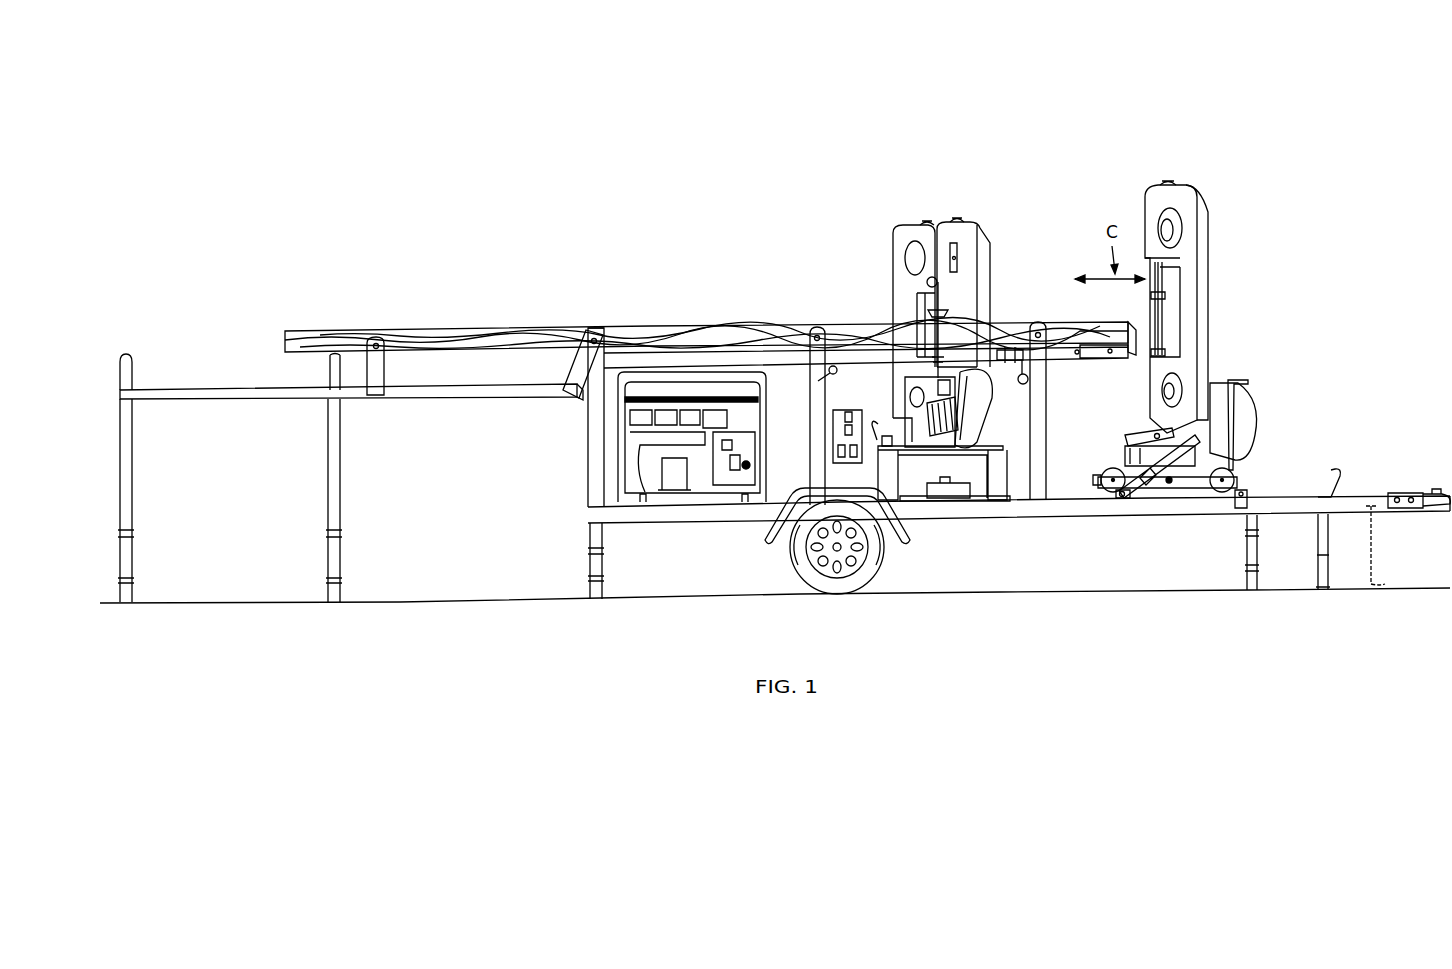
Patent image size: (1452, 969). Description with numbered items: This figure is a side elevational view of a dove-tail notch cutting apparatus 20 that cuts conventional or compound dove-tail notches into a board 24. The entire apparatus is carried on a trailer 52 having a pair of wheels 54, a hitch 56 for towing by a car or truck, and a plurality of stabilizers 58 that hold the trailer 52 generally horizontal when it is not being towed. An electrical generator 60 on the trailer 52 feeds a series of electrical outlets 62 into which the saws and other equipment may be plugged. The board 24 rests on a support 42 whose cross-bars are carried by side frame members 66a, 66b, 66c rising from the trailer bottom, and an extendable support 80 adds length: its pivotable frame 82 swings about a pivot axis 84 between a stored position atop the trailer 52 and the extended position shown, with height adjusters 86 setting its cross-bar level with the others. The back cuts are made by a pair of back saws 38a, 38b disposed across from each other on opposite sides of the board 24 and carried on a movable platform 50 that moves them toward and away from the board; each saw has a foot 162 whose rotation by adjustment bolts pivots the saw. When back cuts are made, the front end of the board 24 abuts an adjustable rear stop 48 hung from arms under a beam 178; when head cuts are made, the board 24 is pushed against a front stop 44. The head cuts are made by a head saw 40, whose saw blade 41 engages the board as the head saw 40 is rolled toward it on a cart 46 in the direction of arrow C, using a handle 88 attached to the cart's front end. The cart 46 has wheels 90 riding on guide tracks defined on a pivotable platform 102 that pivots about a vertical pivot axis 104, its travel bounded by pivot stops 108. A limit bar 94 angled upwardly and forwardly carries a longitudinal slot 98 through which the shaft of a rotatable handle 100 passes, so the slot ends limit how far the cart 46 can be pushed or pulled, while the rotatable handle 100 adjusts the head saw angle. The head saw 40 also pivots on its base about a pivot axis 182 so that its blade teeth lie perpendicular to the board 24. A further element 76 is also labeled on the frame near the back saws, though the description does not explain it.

The dove-tail notch cutting apparatus 20 is at (792, 86).
The board 24 is at (462, 329).
The back saw 38a is at (914, 232).
The back saw 38b is at (965, 230).
The head saw 40 is at (1186, 206).
The saw blade 41 is at (1158, 324).
The support 42 is at (604, 329).
The front stop 44 is at (1126, 318).
The cart 46 is at (1098, 481).
The rear stop 48 is at (1016, 349).
The movable platform 50 is at (1002, 446).
The trailer 52 is at (1348, 505).
The wheels 54 is at (880, 556).
The hitch 56 is at (1416, 490).
The stabilizers 58 is at (604, 560).
The electrical generator 60 is at (699, 487).
The electrical outlets 62 is at (858, 418).
The side frame member 66a is at (1047, 413).
The side frame member 66b is at (814, 457).
The side frame member 66c is at (590, 456).
The lever 76 is at (834, 366).
The extendable support 80 is at (389, 270).
The pivotable frame 82 is at (447, 397).
The pivot axis 84 is at (592, 335).
The height adjusters 86 is at (134, 563).
The handle 88 is at (1247, 382).
The wheels 90 is at (1108, 468).
The limit bar 94 is at (1122, 499).
The longitudinal slot 98 is at (1144, 470).
The rotatable handle 100 is at (1169, 483).
The pivotable platform 102 is at (1020, 501).
The vertical pivot axis 104 is at (947, 485).
The pivot stops 108 is at (1248, 492).
The foot 162 is at (1137, 435).
The beam 178 is at (692, 355).
The pivot axis 182 is at (1163, 432).